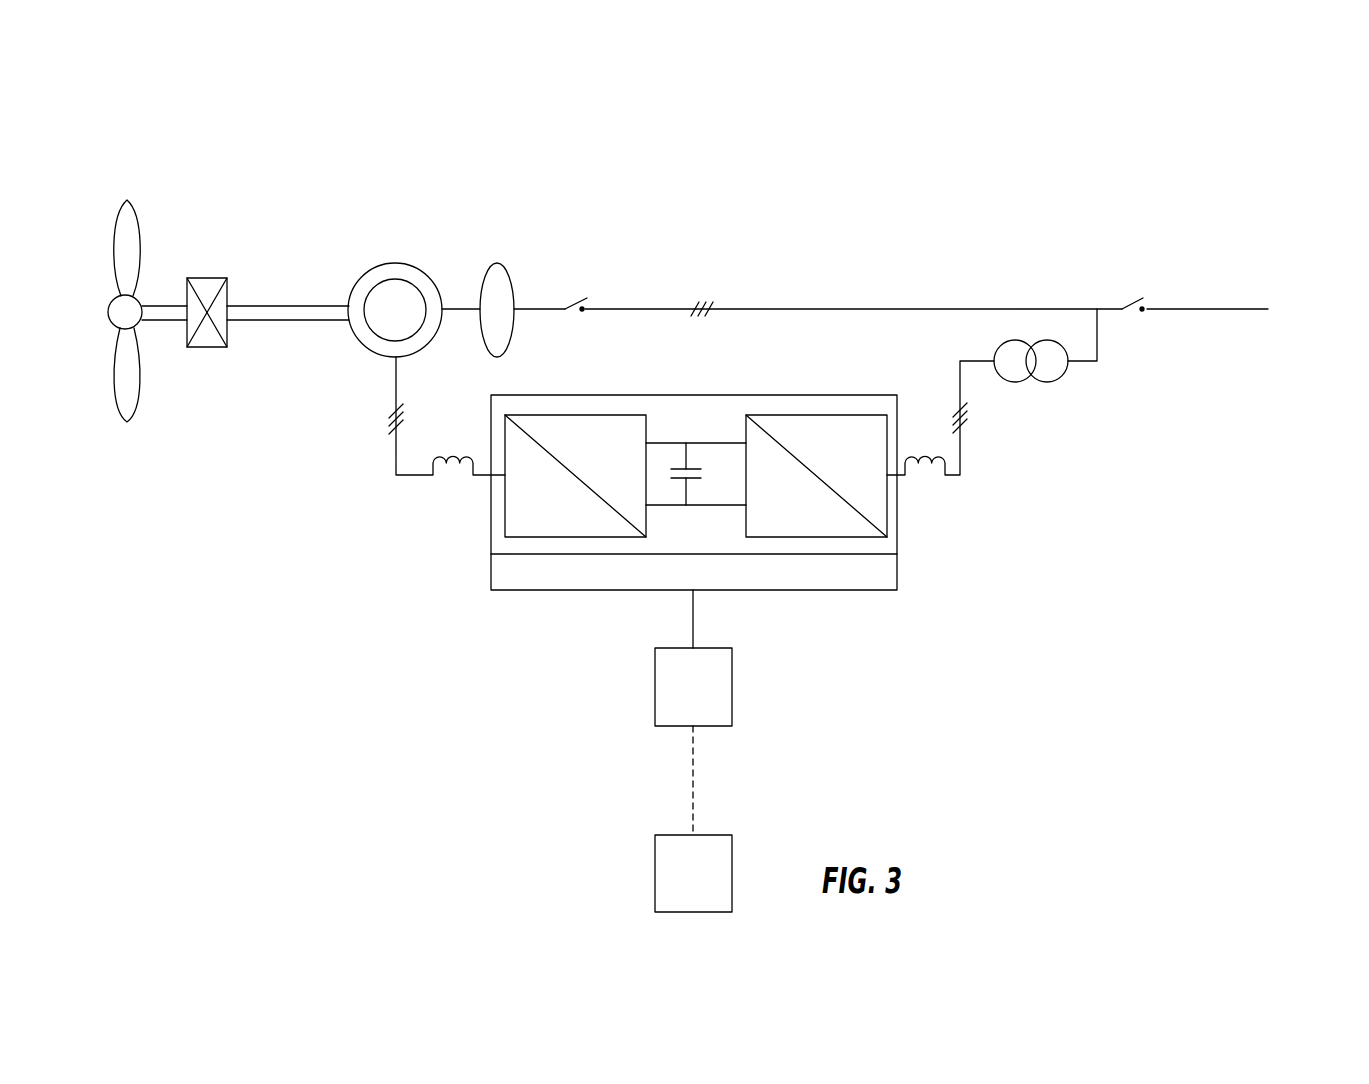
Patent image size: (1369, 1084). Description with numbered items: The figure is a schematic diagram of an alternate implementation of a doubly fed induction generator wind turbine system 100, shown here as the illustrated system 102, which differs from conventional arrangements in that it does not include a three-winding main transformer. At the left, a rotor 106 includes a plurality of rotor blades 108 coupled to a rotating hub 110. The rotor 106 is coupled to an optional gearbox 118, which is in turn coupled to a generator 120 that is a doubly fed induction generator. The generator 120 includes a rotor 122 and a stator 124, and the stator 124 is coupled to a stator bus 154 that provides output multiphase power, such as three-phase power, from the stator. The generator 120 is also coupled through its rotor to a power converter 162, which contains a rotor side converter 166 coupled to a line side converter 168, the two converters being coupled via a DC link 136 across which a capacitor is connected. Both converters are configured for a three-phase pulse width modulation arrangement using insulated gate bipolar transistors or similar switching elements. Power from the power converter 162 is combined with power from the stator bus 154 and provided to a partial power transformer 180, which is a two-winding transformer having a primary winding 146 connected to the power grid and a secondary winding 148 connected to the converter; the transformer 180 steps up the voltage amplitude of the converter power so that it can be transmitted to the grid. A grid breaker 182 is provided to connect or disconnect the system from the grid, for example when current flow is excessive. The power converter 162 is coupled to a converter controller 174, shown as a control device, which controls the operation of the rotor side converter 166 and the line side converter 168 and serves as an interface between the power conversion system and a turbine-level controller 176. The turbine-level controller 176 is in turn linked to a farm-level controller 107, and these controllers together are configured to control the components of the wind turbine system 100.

The DFIG wind turbine system 100 is at (290, 155).
The system 102 is at (1036, 182).
The rotor 106 is at (100, 300).
The rotor blades 108 is at (127, 253).
The rotating hub 110 is at (112, 329).
The gearbox 118 is at (205, 278).
The doubly fed induction generator 120 is at (424, 253).
The rotor 122 is at (373, 340).
The stator 124 is at (358, 280).
The stator bus 154 is at (497, 263).
The DC link 136 is at (697, 418).
The primary winding 146 is at (1060, 342).
The secondary winding 148 is at (1005, 343).
The power converter 162 is at (480, 528).
The rotor side converter 166 is at (566, 415).
The line side converter 168 is at (814, 415).
The converter controller 174 is at (530, 592).
The turbine-level controller 176 is at (676, 701).
The farm-level controller 107 is at (676, 888).
The partial power transformer 180 is at (1055, 395).
The grid breaker 182 is at (1156, 294).